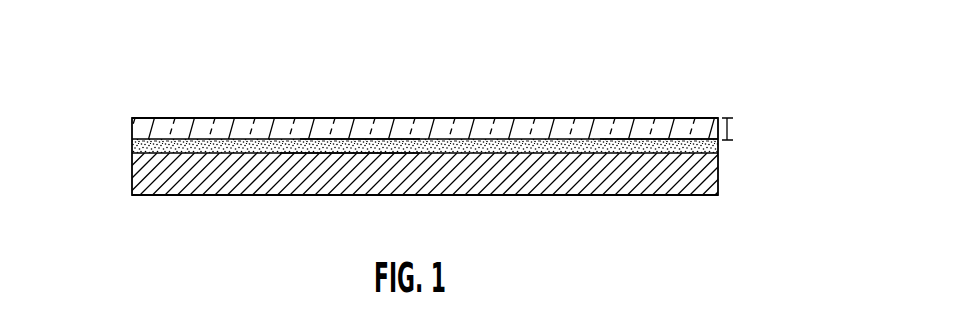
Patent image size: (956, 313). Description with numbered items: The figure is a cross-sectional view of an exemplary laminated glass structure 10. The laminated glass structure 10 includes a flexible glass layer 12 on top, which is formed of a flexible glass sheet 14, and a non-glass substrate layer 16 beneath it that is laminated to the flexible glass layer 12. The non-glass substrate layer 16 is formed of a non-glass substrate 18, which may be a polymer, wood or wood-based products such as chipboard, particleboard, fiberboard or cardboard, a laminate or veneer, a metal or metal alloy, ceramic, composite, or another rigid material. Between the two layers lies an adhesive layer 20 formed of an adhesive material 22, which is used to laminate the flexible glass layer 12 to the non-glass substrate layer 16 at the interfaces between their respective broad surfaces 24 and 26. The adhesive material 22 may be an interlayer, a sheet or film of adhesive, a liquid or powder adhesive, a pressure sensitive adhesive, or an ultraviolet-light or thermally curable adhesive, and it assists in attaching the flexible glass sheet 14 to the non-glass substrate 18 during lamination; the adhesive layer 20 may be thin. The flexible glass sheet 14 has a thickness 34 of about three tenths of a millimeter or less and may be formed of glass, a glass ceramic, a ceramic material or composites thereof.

The laminated glass structure 10 is at (774, 111).
The flexible glass layer 12 is at (126, 130).
The flexible glass sheet 14 is at (445, 120).
The non-glass substrate layer 16 is at (126, 181).
The non-glass substrate 18 is at (627, 182).
The adhesive layer 20 is at (731, 145).
The adhesive material 22 is at (618, 139).
The broad surface 24 is at (329, 139).
The broad surface 26 is at (338, 153).
The thickness 34 is at (734, 128).